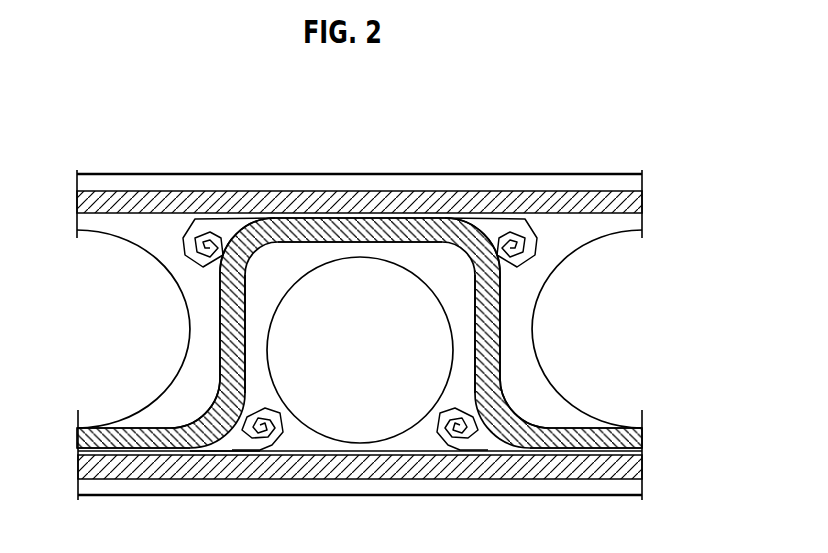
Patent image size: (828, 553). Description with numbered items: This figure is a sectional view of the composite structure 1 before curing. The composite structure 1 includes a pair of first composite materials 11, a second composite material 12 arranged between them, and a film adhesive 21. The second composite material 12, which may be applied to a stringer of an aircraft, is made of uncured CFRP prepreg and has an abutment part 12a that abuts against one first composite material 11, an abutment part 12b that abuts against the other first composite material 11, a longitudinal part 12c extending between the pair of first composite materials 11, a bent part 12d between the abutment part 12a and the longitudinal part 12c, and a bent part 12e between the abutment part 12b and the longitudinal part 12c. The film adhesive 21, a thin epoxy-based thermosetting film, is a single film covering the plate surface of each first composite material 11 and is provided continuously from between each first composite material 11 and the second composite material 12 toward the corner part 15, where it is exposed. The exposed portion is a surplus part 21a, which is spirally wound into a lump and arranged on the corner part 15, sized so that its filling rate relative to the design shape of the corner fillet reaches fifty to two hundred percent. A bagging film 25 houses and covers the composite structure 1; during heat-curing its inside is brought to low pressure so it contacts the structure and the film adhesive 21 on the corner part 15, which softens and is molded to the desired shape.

The composite structure 1 is at (291, 150).
The first composite material 11 is at (562, 191).
The second composite material 12 is at (501, 306).
The abutment part 12a is at (362, 243).
The abutment part 12b is at (110, 428).
The longitudinal part 12c is at (220, 312).
The bent part 12d is at (262, 241).
The bent part 12e is at (205, 410).
The corner part 15 is at (232, 437).
The film adhesive 21 is at (128, 452).
The surplus part 21a is at (284, 423).
The bagging film 25 is at (398, 255).